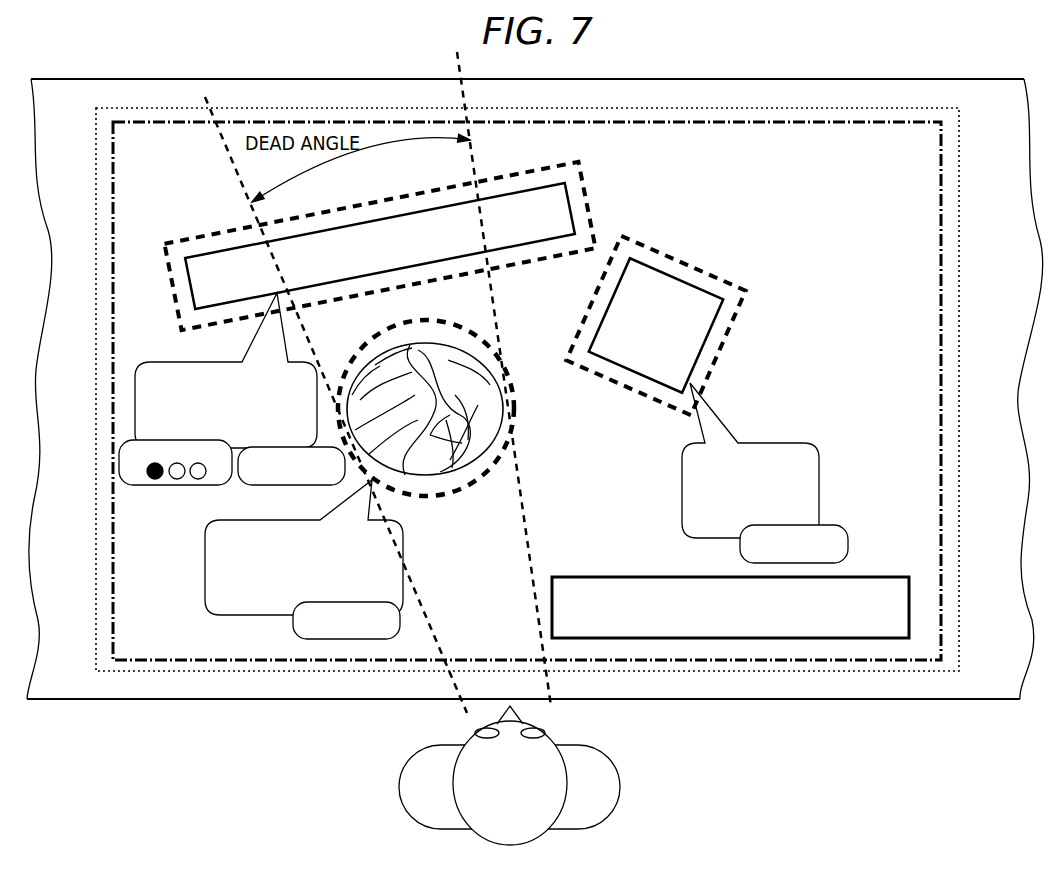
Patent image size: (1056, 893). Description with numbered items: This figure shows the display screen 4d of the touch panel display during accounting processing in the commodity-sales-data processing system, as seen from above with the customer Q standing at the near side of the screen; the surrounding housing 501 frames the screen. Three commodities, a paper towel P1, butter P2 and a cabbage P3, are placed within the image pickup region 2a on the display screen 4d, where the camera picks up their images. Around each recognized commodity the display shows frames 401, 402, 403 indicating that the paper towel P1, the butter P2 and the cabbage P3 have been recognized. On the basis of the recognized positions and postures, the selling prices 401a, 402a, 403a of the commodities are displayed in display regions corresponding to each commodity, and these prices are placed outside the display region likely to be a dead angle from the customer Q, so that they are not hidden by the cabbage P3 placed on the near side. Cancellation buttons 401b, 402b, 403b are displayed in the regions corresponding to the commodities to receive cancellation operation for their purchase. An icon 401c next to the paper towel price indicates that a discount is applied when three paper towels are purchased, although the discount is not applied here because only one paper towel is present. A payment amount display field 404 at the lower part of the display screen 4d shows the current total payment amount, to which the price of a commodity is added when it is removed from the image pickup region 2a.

The image pickup region 2a is at (215, 635).
The display screen 4d is at (160, 673).
The display device housing 501 is at (850, 690).
The frame 401 is at (214, 240).
The paper towel P1 is at (568, 203).
The selling price 401a is at (143, 362).
The cancellation button 401b is at (250, 487).
The icon 401c is at (134, 486).
The frame 402 is at (676, 255).
The butter P2 is at (700, 289).
The selling price 402a is at (790, 445).
The cancellation button 402b is at (833, 528).
The frame 403 is at (470, 483).
The cabbage P3 is at (490, 448).
The selling price 403a is at (218, 578).
The cancellation button 403b is at (368, 639).
The payment amount display field 404 is at (740, 640).
The customer Q is at (400, 788).